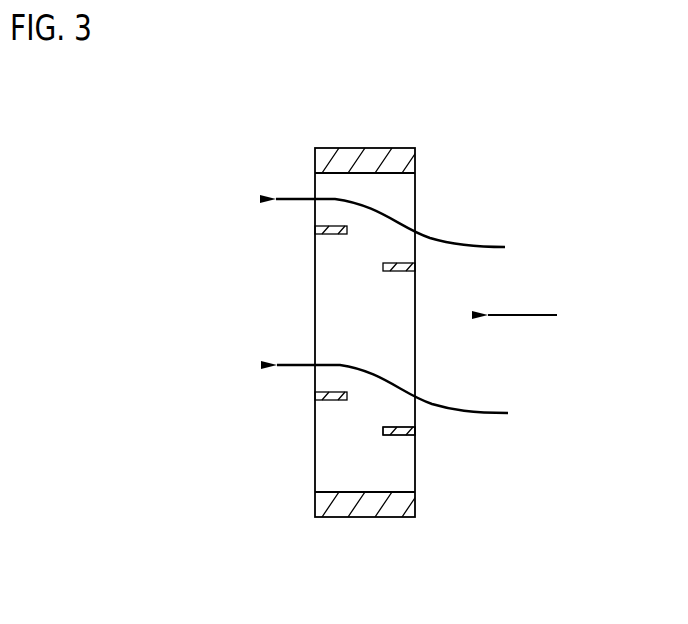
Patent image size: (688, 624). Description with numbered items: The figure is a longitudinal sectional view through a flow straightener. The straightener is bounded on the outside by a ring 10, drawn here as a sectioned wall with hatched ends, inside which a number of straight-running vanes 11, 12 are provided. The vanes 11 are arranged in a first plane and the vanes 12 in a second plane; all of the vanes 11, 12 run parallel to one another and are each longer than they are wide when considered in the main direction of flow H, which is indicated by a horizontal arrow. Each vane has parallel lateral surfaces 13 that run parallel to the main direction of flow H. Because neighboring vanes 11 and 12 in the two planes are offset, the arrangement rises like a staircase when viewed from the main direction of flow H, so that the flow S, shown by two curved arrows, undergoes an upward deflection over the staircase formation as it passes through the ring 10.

The ring 10 is at (386, 148).
The vanes 11 is at (404, 263).
The vanes 12 is at (330, 226).
The lateral surfaces 13 is at (393, 427).
The flow S is at (488, 247).
The main direction of flow H is at (542, 315).